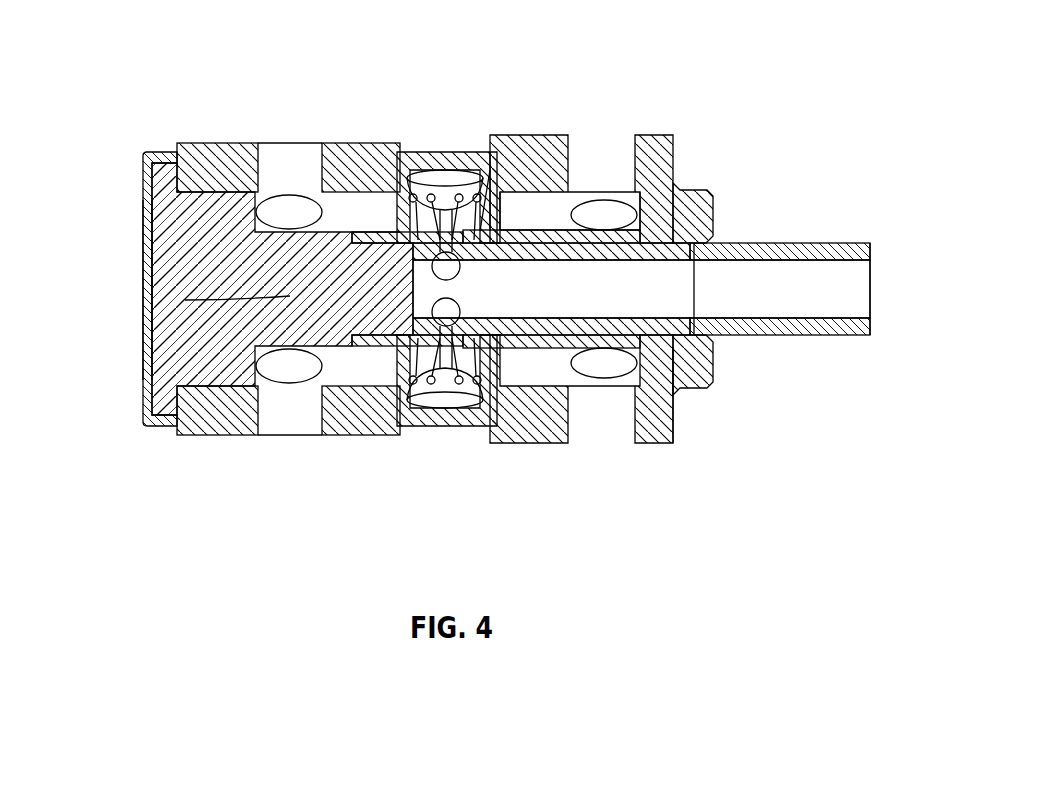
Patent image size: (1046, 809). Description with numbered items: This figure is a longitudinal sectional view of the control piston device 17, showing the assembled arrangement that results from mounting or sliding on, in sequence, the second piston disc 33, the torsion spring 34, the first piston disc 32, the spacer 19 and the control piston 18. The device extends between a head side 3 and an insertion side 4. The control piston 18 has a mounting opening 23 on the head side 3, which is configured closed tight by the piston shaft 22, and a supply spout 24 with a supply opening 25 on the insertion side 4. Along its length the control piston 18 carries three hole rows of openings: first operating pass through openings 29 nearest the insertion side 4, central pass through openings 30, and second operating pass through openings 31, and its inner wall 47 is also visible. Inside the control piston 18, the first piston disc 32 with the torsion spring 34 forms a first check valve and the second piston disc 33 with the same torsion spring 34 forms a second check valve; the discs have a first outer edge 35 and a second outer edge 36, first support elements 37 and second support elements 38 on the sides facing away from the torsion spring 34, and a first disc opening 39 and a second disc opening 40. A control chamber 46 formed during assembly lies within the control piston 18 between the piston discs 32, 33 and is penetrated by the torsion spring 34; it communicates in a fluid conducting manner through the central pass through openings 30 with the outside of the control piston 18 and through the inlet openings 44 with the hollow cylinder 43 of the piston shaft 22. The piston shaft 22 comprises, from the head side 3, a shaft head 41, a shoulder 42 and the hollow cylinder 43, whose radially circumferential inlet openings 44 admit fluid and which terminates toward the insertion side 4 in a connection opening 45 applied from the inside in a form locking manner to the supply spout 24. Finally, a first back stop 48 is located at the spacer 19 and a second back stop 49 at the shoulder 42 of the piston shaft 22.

The head side 3 is at (126, 289).
The insertion side 4 is at (884, 273).
The control piston device 17 is at (135, 160).
The control piston 18 is at (720, 185).
The spacer 19 is at (635, 228).
The piston shaft 22 is at (210, 178).
The mounting opening 23 is at (136, 333).
The supply spout 24 is at (815, 340).
The supply opening 25 is at (880, 318).
The first operating pass through openings 29 is at (600, 165).
The central pass through openings 30 is at (444, 176).
The second operating pass through openings 31 is at (276, 520).
The first piston disc 32 is at (493, 230).
The second piston disc 33 is at (397, 243).
The torsion spring 34 is at (432, 198).
The first outer edge 35 is at (462, 205).
The second outer edge 36 is at (402, 158).
The first support elements 37 is at (497, 395).
The second support elements 38 is at (440, 398).
The first disc opening 39 is at (580, 228).
The second disc opening 40 is at (373, 222).
The shaft head 41 is at (186, 258).
The shoulder 42 is at (294, 296).
The hollow cylinder 43 is at (677, 383).
The inlet openings 44 is at (537, 216).
The connection opening 45 is at (724, 293).
The control chamber 46 is at (432, 385).
The inner wall 47 is at (358, 224).
The first back stop 48 is at (527, 330).
The second back stop 49 is at (374, 348).